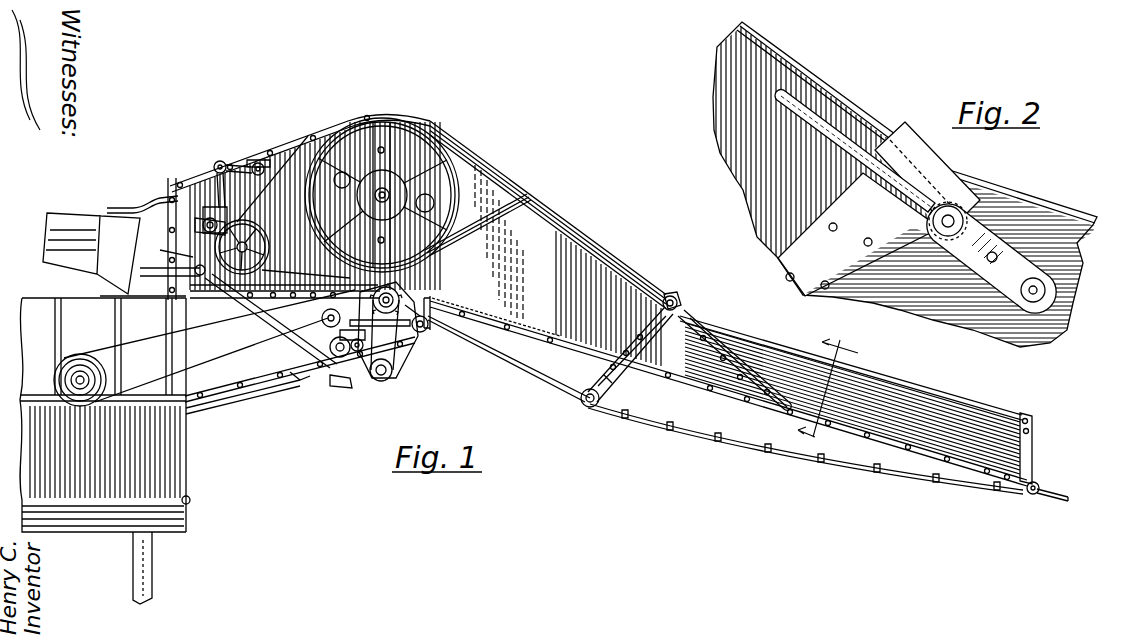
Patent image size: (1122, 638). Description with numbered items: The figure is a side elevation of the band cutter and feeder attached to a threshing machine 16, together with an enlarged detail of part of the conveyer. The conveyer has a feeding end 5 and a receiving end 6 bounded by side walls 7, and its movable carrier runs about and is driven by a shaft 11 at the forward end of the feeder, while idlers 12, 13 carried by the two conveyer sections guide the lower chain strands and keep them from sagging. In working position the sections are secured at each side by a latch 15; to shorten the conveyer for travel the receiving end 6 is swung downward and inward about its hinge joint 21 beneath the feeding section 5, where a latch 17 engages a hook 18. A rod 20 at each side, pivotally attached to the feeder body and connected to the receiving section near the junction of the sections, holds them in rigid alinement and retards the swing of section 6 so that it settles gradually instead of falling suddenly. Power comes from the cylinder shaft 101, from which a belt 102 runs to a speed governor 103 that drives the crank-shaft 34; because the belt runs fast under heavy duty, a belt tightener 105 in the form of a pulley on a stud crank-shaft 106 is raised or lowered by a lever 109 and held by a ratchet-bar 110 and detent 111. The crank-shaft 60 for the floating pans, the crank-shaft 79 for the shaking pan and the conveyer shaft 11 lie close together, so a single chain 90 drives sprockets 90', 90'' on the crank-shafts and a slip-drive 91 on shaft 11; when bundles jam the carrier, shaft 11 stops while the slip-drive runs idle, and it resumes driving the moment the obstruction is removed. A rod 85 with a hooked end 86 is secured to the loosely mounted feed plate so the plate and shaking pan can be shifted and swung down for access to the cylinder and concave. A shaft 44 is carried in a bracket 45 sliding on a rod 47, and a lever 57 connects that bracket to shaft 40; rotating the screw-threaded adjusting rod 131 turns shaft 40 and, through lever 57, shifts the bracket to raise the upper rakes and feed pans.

In FIG. 1, the feeding end of the conveyer 5 is at (597, 301).
In FIG. 2, the feeding end of the conveyer 5 is at (735, 192).
In FIG. 1, the receiving end of the conveyer 6 is at (900, 404).
In FIG. 2, the receiving end of the conveyer 6 is at (1020, 206).
In FIG. 1, the side walls 7 is at (1034, 445).
In FIG. 2, the side walls 7 is at (1052, 226).
In FIG. 1, the shaft 11 is at (379, 330).
In FIG. 1, the idler 12 is at (426, 332).
In FIG. 1, the idler 13 is at (590, 408).
In FIG. 1, the latch 15 is at (688, 284).
In FIG. 2, the latch 15 is at (900, 142).
In FIG. 1, the threshing machine 16 is at (103, 415).
In FIG. 1, the latch 17 is at (1050, 503).
In FIG. 1, the hook 18 is at (188, 479).
In FIG. 1, the rod 20 is at (522, 196).
In FIG. 2, the rod 20 is at (838, 108).
In FIG. 1, the hinge joint 21 is at (626, 378).
In FIG. 1, the crank-shaft 34 is at (382, 195).
In FIG. 1, the shaft 40 is at (280, 160).
In FIG. 1, the shaft 44 is at (205, 222).
In FIG. 1, the bracket 45 is at (236, 210).
In FIG. 1, the rod 47 is at (212, 210).
In FIG. 1, the lever 57 is at (237, 163).
In FIG. 1, the crank-shaft 60 is at (316, 324).
In FIG. 1, the crank-shaft 79 is at (340, 390).
In FIG. 1, the rod 85 is at (240, 398).
In FIG. 1, the hooked end 86 is at (296, 383).
In FIG. 1, the chain 90 is at (364, 377).
In FIG. 1, the sprocket 90' is at (327, 376).
In FIG. 1, the sprocket 90'' is at (404, 373).
In FIG. 1, the slip-drive 91 is at (398, 292).
In FIG. 1, the cylinder shaft 101 is at (84, 352).
In FIG. 1, the belt 102 is at (160, 372).
In FIG. 1, the speed governor 103 is at (485, 121).
In FIG. 1, the belt tightener 105 is at (270, 255).
In FIG. 1, the stud crank-shaft 106 is at (185, 252).
In FIG. 1, the lever 109 is at (272, 398).
In FIG. 1, the ratchet-bar 110 is at (282, 338).
In FIG. 1, the detent 111 is at (284, 277).
In FIG. 1, the adjusting rod 131 is at (112, 206).